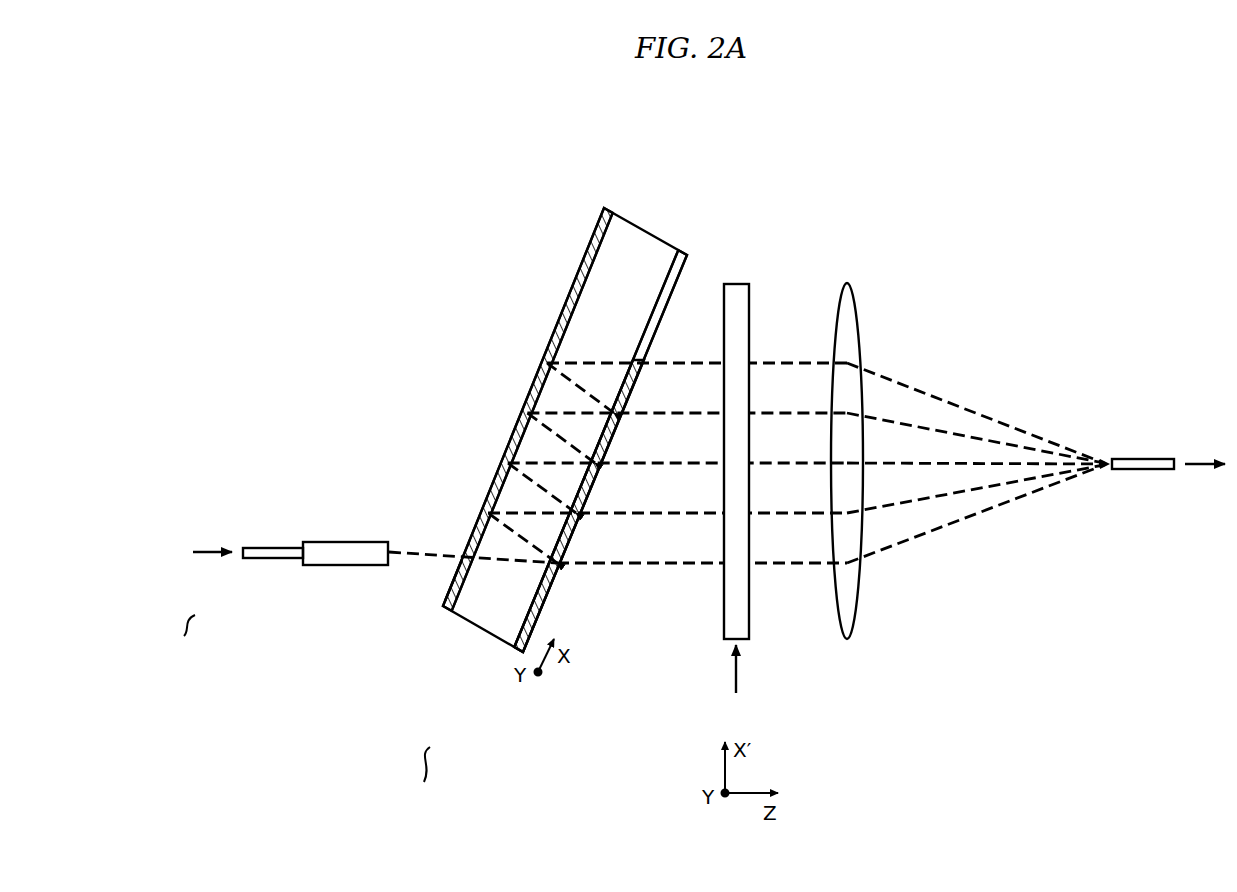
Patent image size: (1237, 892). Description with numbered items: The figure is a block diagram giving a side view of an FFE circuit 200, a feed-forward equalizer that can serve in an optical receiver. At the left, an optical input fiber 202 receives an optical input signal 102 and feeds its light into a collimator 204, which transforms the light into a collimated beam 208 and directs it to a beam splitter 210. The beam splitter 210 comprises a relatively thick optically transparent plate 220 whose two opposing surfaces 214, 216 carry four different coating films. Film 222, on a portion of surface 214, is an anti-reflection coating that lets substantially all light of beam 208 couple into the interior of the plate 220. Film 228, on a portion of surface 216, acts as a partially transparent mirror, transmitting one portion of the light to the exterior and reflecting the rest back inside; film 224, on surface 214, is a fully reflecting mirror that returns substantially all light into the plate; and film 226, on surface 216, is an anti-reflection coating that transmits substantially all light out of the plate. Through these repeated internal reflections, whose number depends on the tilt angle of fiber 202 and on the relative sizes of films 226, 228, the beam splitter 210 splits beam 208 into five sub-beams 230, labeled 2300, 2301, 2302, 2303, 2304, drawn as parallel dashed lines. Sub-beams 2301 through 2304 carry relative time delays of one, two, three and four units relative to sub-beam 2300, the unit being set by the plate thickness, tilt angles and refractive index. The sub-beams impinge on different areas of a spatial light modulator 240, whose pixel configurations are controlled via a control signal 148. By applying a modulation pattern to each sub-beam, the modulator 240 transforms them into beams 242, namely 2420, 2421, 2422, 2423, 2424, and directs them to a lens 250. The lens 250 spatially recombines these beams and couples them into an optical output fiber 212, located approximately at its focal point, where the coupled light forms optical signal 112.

The FFE circuit 200 is at (318, 162).
The optical input signal 102 is at (203, 556).
The optical signal 112 is at (1200, 466).
The control signal 148 is at (740, 670).
The optical input fiber 202 is at (272, 560).
The collimator 204 is at (340, 567).
The collimated beam 208 is at (428, 550).
The beam splitter 210 is at (418, 780).
The optical output fiber 212 is at (1141, 471).
The surface 214 is at (582, 287).
The surface 216 is at (664, 290).
The plate 220 is at (652, 234).
The film 222 is at (449, 587).
The film 224 is at (586, 253).
The film 226 is at (663, 315).
The film 228 is at (551, 587).
The sub-beams 230 is at (667, 483).
The sub-beam 2300 is at (650, 565).
The sub-beam 2301 is at (650, 515).
The sub-beam 2302 is at (650, 465).
The sub-beam 2303 is at (650, 415).
The sub-beam 2304 is at (650, 365).
The spatial light modulator 240 is at (735, 283).
The beams 242 is at (933, 483).
The beam 2420 is at (757, 565).
The beam 2421 is at (757, 515).
The beam 2422 is at (757, 465).
The beam 2423 is at (757, 415).
The beam 2424 is at (757, 365).
The lens 250 is at (846, 283).